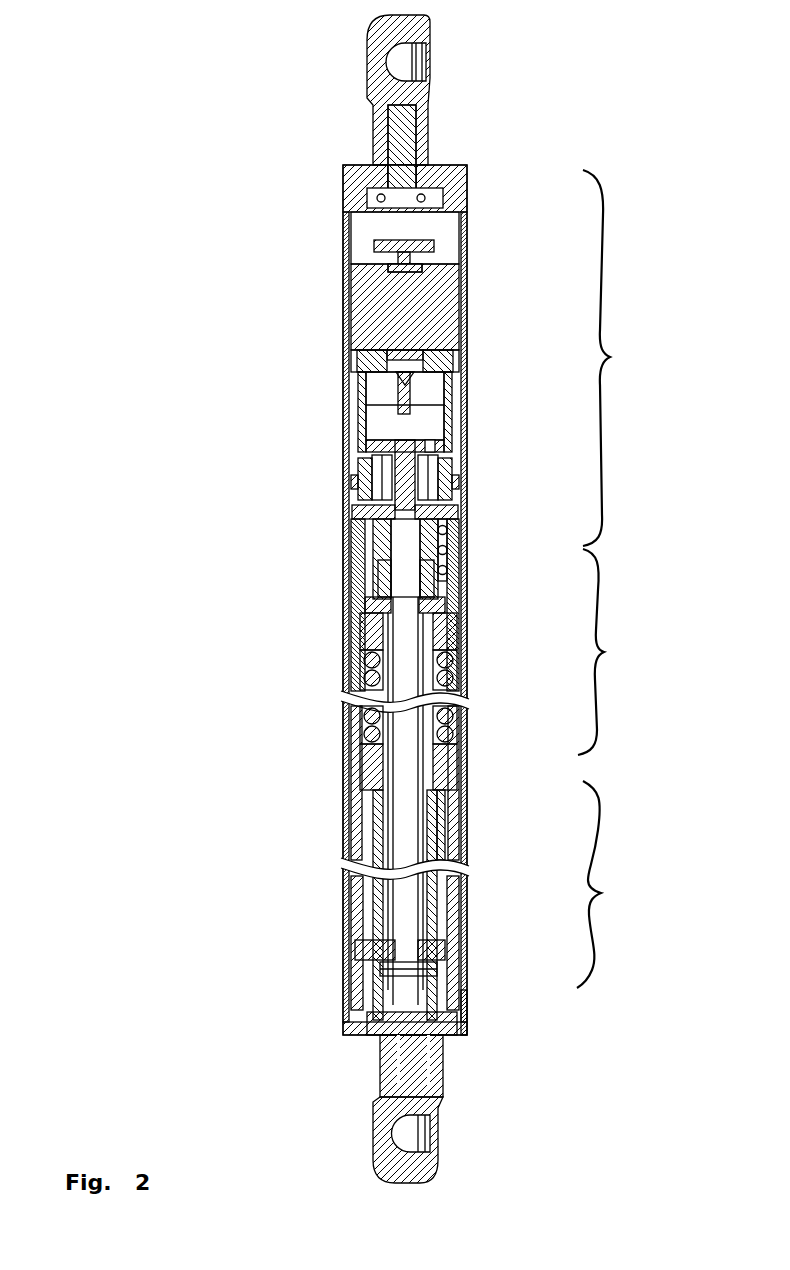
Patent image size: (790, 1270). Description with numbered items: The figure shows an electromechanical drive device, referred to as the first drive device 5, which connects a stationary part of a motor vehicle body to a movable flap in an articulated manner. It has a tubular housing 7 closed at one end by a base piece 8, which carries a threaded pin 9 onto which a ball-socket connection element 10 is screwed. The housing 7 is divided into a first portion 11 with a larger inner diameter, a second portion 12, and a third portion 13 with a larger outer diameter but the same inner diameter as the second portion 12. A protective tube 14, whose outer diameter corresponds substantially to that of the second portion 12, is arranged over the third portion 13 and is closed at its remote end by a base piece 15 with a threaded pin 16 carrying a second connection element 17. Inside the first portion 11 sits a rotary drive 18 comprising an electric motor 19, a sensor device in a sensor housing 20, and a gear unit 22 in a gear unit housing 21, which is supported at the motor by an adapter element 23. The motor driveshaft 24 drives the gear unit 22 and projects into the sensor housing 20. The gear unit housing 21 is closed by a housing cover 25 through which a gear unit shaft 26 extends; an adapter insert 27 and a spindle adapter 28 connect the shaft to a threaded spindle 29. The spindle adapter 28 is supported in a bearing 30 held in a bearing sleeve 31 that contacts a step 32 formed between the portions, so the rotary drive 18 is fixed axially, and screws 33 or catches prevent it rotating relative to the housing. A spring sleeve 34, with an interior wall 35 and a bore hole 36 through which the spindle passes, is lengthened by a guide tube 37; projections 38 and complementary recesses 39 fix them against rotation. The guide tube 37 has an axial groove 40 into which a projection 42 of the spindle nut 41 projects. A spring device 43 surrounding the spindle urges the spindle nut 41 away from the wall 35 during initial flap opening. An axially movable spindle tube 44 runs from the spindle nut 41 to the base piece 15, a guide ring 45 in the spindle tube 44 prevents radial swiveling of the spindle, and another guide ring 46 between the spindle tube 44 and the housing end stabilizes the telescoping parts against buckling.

The first drive device 5 is at (186, 62).
The housing 7 is at (347, 262).
The base piece 8 is at (455, 168).
The threaded pin 9 is at (410, 138).
The connection element 10 is at (413, 95).
The first portion 11 is at (617, 358).
The second portion 12 is at (613, 652).
The third portion 13 is at (615, 884).
The protective tube 14 is at (470, 1004).
The base piece 15 is at (446, 1034).
The threaded pin 16 is at (418, 1066).
The second connection element 17 is at (428, 1106).
The rotary drive 18 is at (522, 314).
The electric motor 19 is at (450, 302).
The sensor housing 20 is at (465, 238).
The gear unit housing 21 is at (464, 442).
The gear unit 22 is at (436, 392).
The adapter element 23 is at (456, 362).
The motor driveshaft 24 is at (352, 386).
The housing cover 25 is at (356, 482).
The gear unit shaft 26 is at (352, 520).
The adapter insert 27 is at (456, 516).
The spindle adapter 28 is at (446, 586).
The threaded spindle 29 is at (442, 668).
The bearing 30 is at (457, 542).
The bearing sleeve 31 is at (358, 526).
The step 32 is at (356, 566).
The screws 33 is at (455, 497).
The spring sleeve 34 is at (458, 629).
The wall 35 is at (452, 640).
The bore hole 36 is at (357, 638).
The guide tube 37 is at (357, 916).
The projections 38 is at (357, 712).
The recesses 39 is at (463, 714).
The groove 40 is at (464, 802).
The spindle nut 41 is at (462, 764).
The projection 42 is at (357, 766).
The spring device 43 is at (357, 672).
The spindle tube 44 is at (357, 840).
The guide ring 45 is at (357, 942).
The guide ring 46 is at (357, 976).